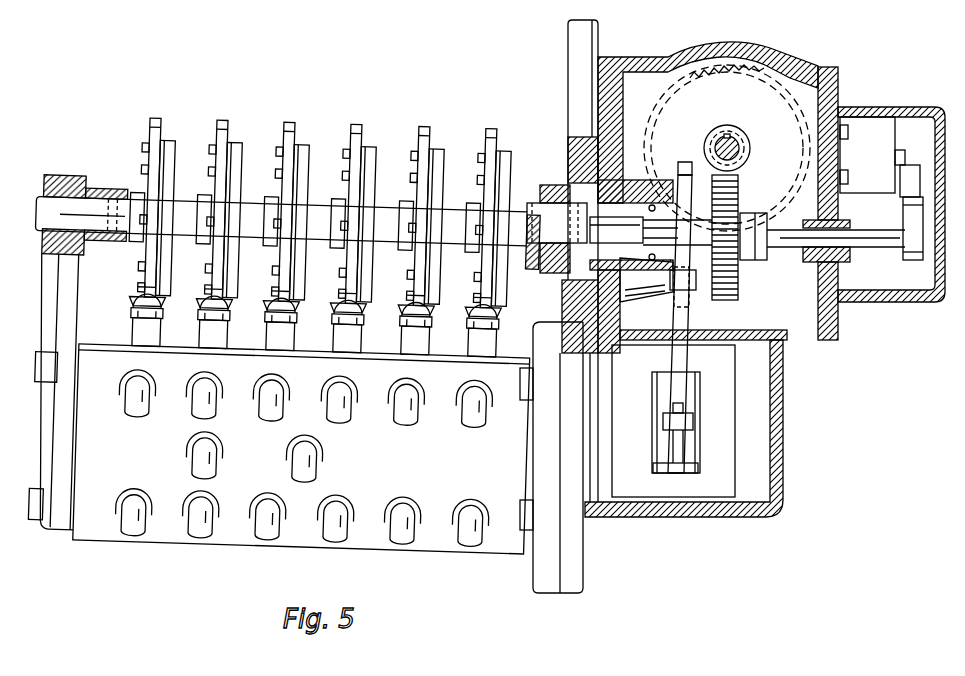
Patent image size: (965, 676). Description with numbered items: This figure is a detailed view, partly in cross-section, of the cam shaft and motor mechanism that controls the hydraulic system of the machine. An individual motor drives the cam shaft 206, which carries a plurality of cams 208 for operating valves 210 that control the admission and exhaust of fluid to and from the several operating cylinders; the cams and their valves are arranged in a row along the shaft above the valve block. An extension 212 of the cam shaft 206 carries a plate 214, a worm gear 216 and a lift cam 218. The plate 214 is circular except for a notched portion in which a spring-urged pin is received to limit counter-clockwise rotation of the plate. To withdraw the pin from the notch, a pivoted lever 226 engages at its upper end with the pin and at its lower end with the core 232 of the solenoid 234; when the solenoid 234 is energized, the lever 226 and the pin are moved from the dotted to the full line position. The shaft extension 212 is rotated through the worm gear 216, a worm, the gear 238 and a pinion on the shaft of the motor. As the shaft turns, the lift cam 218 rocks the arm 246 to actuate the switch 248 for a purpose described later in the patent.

The cam shaft 206 is at (182, 212).
The cams 208 is at (228, 132).
The valves 210 is at (143, 332).
The extension of the shaft 212 is at (797, 248).
The plate 214 is at (683, 160).
The worm gear 216 is at (737, 300).
The lift cam 218 is at (907, 217).
The lever 226 is at (683, 353).
The core of the solenoid 232 is at (690, 447).
The solenoid 234 is at (720, 421).
The gear 238 is at (748, 63).
The arm 246 is at (907, 167).
The switch 248 is at (855, 152).